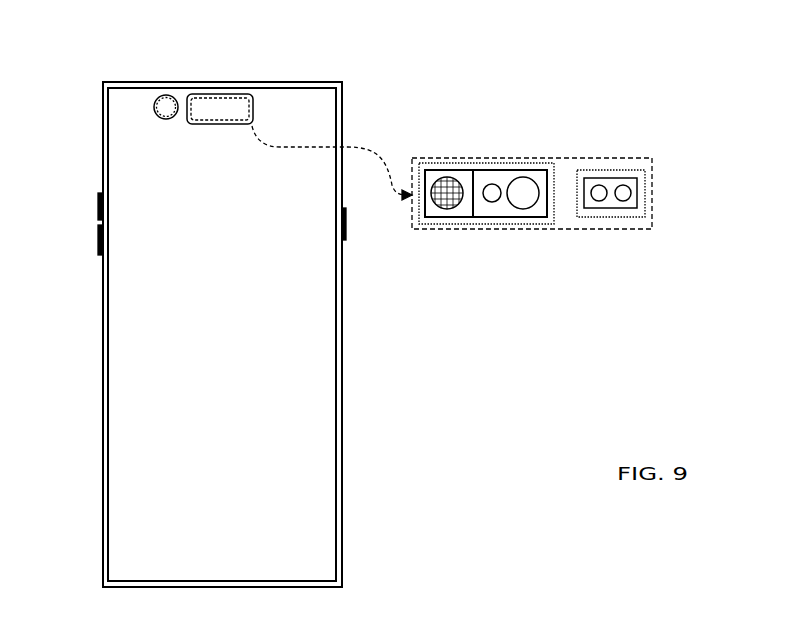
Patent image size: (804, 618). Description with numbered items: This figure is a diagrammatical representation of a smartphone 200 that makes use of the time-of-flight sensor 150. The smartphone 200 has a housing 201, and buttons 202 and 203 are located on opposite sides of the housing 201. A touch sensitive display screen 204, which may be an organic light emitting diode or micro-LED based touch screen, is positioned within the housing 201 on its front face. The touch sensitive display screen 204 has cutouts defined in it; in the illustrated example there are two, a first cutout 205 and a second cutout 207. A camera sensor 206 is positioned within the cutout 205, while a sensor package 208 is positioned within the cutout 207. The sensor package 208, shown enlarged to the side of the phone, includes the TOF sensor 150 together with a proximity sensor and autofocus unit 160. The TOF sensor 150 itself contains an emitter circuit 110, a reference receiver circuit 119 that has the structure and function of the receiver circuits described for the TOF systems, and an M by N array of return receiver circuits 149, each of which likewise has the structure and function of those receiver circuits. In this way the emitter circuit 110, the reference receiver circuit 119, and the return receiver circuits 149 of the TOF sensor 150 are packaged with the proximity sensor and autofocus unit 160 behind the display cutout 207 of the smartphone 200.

The smartphone 200 is at (228, 48).
The housing 201 is at (157, 89).
The button 202 is at (100, 241).
The button 203 is at (346, 238).
The touch sensitive display screen 204 is at (127, 82).
The cutout 205 is at (154, 110).
The camera sensor 206 is at (167, 96).
The cutout 207 is at (241, 94).
The sensor package 208 is at (618, 158).
The return receiver circuits 149 is at (445, 177).
The reference receiver circuit 119 is at (490, 184).
The emitter circuit 110 is at (524, 177).
The time-of-flight sensor 150 is at (432, 224).
The proximity sensor and autofocus unit 160 is at (590, 218).